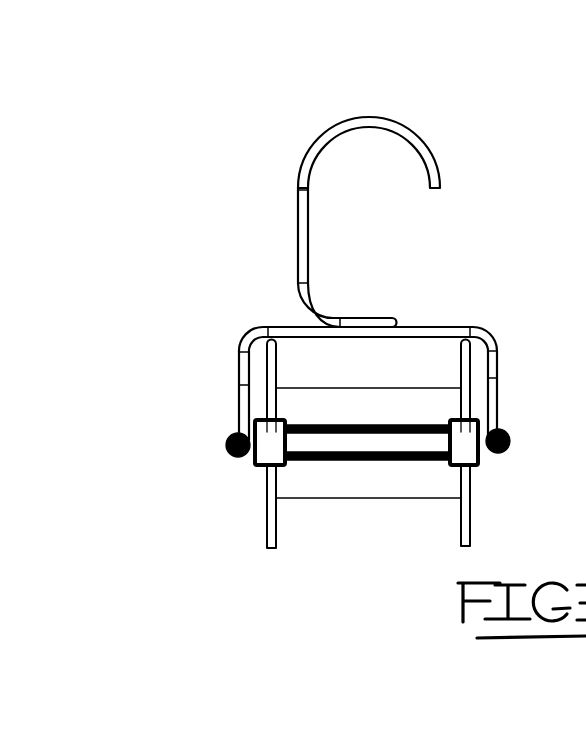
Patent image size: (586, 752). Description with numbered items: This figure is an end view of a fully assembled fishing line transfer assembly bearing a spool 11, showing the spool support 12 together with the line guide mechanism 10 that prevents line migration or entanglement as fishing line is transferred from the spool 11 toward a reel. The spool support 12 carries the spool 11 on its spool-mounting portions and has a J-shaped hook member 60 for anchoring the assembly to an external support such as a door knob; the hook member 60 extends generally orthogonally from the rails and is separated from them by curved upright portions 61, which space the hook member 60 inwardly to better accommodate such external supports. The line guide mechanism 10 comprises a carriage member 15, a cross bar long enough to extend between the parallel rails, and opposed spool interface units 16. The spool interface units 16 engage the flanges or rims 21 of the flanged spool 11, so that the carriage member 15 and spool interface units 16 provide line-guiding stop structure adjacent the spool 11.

The J-shaped hook member 60 is at (392, 125).
The spool support 12 is at (477, 326).
The curved upright portions 61 is at (238, 382).
The line guide mechanism 10 is at (508, 442).
The flanges or rims 21 is at (272, 550).
The spool 11 is at (430, 482).
The carriage member 15 is at (378, 440).
The spool interface units 16 is at (258, 465).